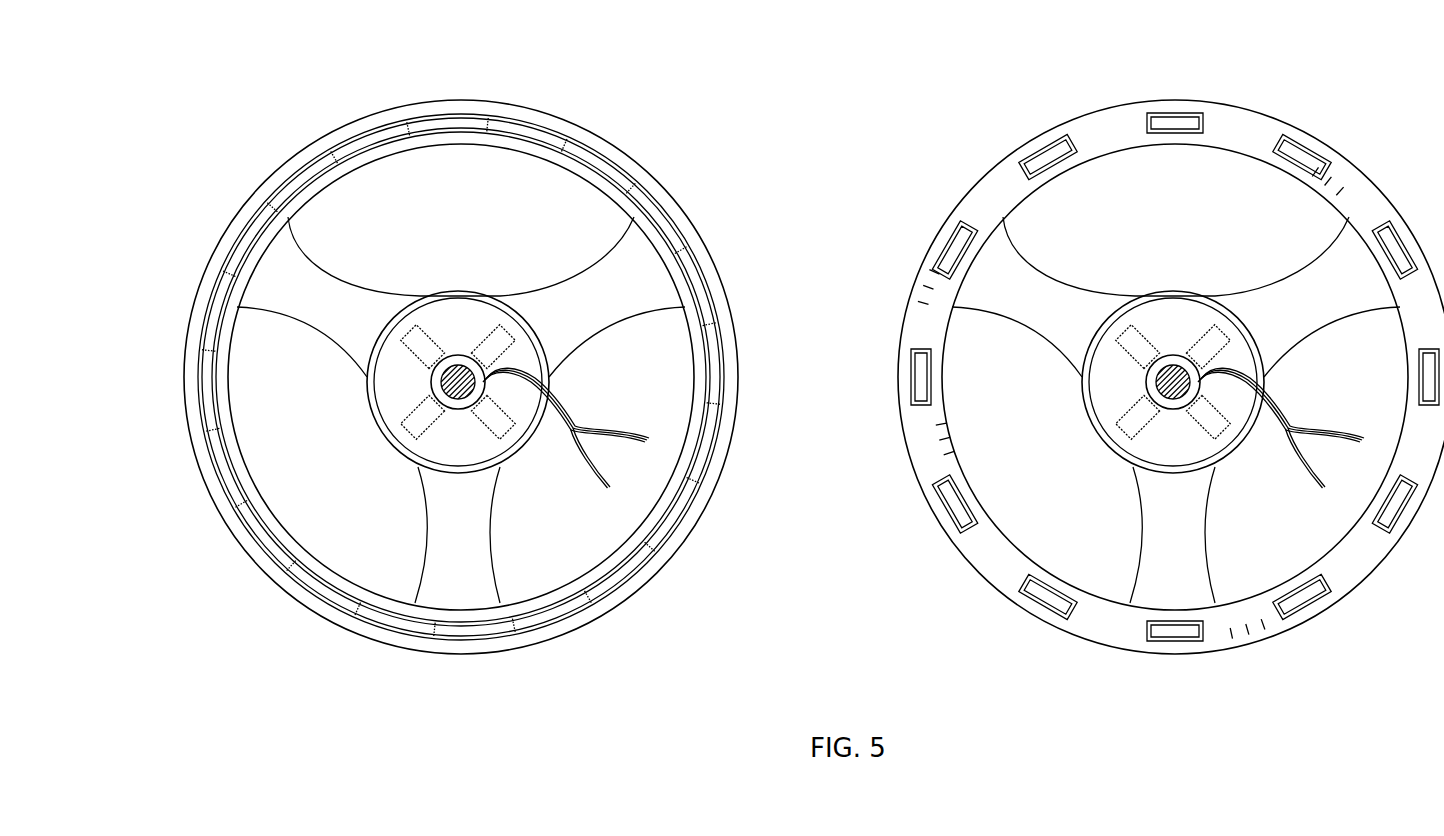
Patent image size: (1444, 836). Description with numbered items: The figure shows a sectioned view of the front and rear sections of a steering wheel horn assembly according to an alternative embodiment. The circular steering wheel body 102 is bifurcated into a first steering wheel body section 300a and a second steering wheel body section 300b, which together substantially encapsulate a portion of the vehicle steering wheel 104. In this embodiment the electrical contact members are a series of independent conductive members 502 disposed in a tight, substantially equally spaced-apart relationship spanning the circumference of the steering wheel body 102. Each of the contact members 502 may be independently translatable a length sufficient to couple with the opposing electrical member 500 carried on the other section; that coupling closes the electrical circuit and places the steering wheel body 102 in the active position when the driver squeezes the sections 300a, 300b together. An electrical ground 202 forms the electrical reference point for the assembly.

The steering wheel body 102 is at (655, 123).
The vehicle steering wheel 104 is at (362, 287).
The electrical ground 202 is at (572, 433).
The first steering wheel body section 300a is at (290, 160).
The second steering wheel body section 300b is at (1237, 122).
The opposing electrical member 500 is at (435, 122).
The independent conductive members 502 is at (1045, 162).